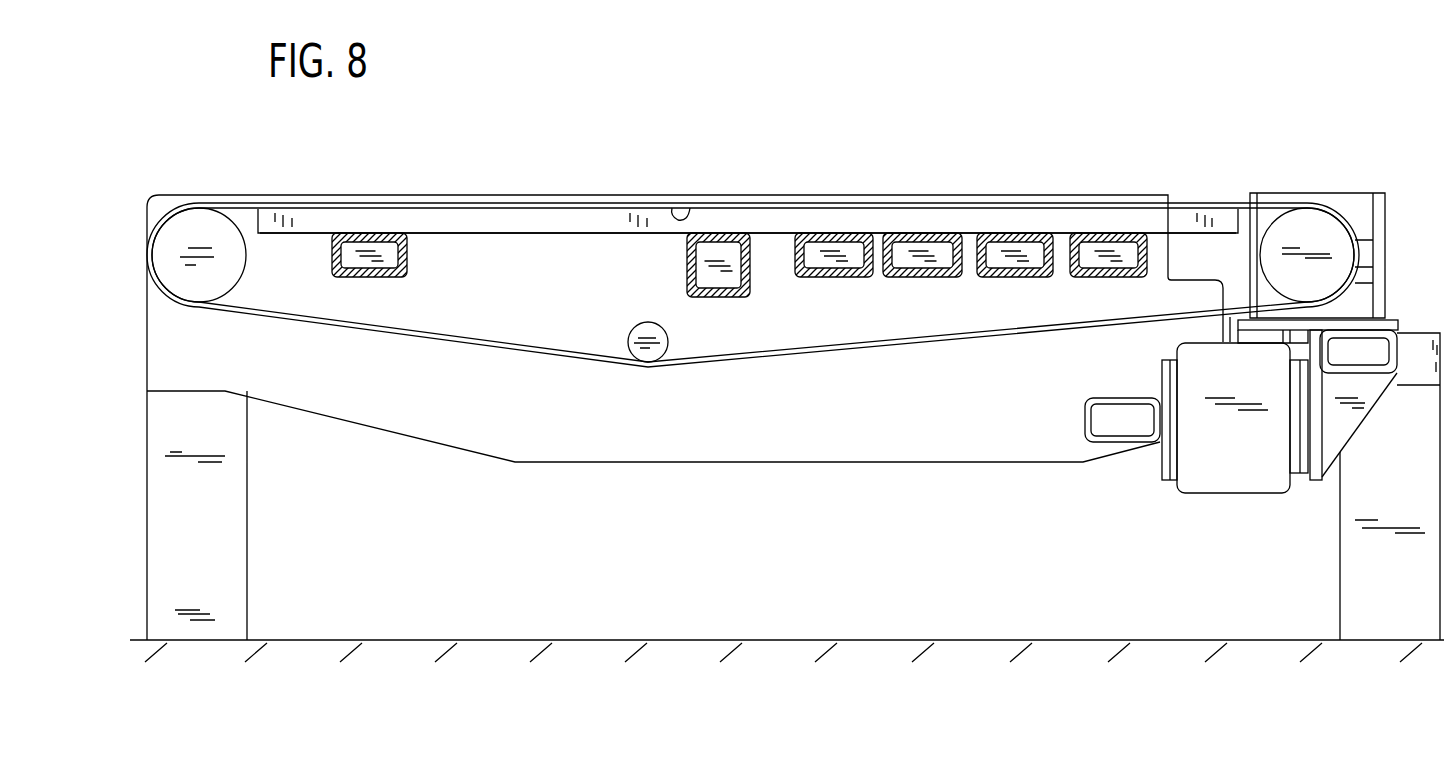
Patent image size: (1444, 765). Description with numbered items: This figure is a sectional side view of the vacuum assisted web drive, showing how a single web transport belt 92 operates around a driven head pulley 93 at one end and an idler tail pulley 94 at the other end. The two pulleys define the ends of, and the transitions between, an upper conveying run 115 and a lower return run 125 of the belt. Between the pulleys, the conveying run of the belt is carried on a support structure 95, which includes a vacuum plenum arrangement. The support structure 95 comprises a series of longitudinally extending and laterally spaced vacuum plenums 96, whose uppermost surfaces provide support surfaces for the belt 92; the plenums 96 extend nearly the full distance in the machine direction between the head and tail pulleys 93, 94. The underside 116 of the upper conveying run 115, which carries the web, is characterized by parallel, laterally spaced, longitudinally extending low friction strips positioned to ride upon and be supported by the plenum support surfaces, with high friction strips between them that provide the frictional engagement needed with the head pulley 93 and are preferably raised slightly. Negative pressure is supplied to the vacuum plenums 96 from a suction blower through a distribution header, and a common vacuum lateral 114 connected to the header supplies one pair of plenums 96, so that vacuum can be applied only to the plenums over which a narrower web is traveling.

The web transport belt 92 is at (1207, 208).
The driven head pulley 93 is at (182, 227).
The idler tail pulley 94 is at (1312, 225).
The support structure 95 is at (544, 233).
The vacuum plenum 96 is at (1072, 218).
The vacuum lateral 114 is at (827, 280).
The upper conveying run 115 is at (757, 201).
The underside 116 is at (690, 210).
The lower return run 125 is at (712, 365).